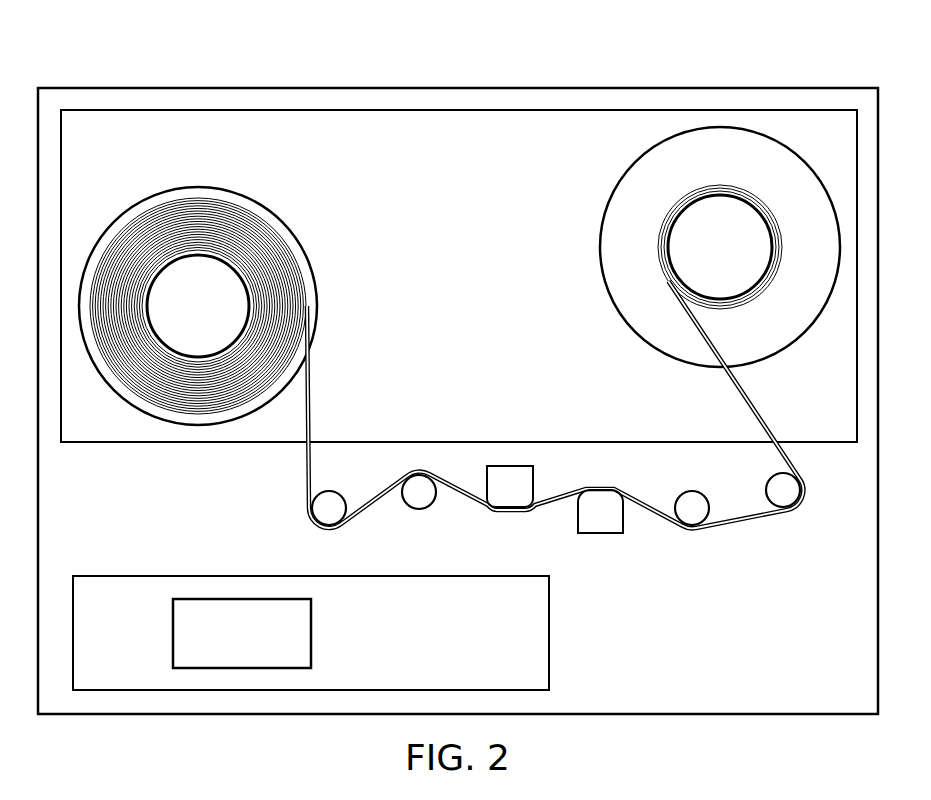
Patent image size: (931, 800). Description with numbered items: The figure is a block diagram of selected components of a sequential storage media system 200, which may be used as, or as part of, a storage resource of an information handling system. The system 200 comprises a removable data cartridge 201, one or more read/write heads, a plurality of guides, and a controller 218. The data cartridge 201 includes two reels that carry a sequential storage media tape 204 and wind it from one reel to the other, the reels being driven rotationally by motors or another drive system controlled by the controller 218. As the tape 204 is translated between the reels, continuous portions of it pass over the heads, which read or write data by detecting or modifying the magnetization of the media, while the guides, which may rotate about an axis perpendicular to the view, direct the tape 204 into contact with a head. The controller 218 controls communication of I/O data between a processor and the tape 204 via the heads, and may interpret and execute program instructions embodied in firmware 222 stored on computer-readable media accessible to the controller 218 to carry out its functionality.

The sequential storage media system 200 is at (326, 82).
The removable data cartridge 201 is at (480, 284).
The sequential storage media tape 204 is at (198, 188).
The controller 218 is at (549, 632).
The firmware 222 is at (172, 632).